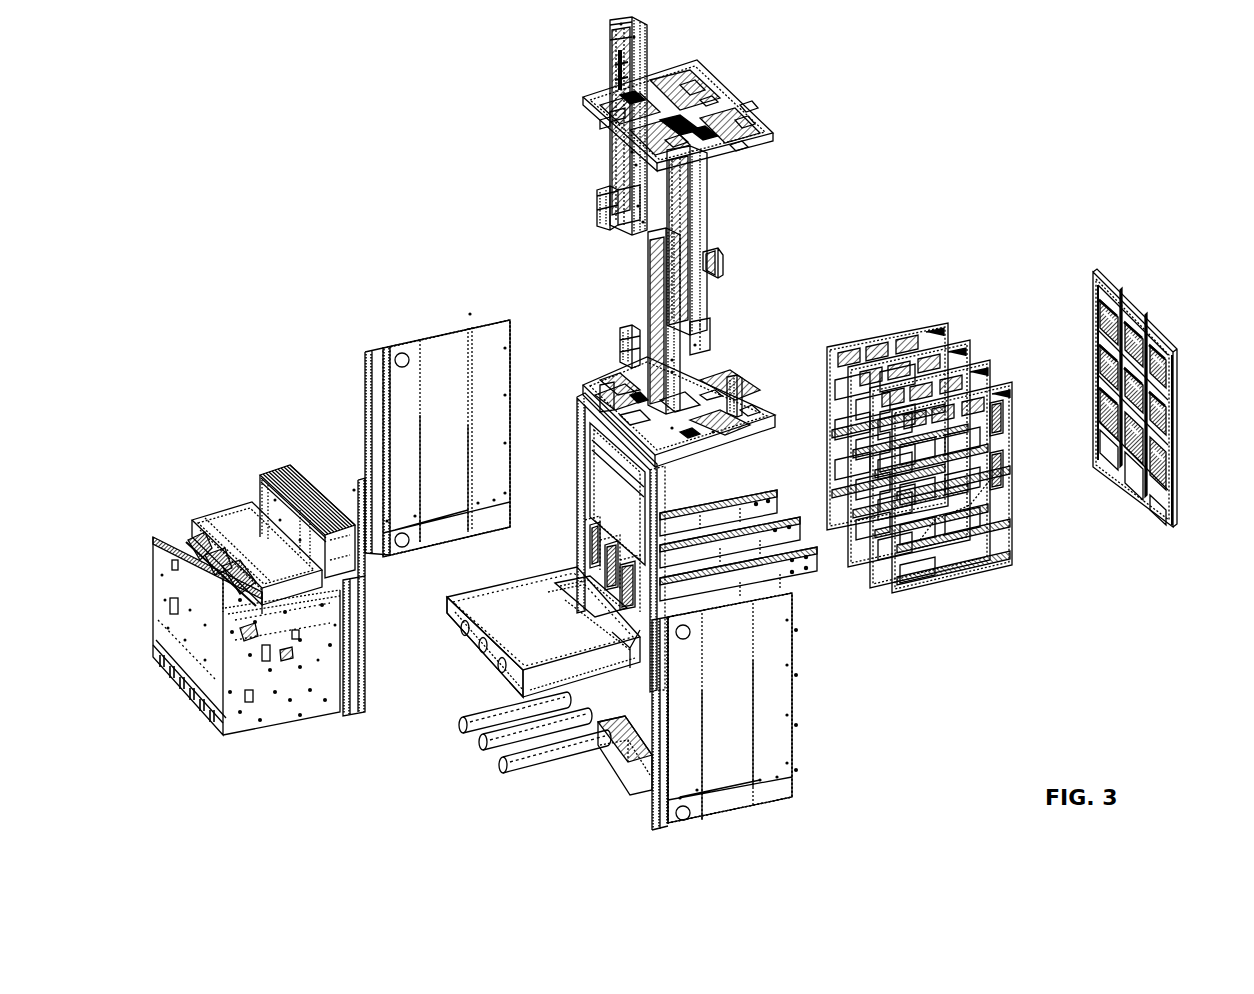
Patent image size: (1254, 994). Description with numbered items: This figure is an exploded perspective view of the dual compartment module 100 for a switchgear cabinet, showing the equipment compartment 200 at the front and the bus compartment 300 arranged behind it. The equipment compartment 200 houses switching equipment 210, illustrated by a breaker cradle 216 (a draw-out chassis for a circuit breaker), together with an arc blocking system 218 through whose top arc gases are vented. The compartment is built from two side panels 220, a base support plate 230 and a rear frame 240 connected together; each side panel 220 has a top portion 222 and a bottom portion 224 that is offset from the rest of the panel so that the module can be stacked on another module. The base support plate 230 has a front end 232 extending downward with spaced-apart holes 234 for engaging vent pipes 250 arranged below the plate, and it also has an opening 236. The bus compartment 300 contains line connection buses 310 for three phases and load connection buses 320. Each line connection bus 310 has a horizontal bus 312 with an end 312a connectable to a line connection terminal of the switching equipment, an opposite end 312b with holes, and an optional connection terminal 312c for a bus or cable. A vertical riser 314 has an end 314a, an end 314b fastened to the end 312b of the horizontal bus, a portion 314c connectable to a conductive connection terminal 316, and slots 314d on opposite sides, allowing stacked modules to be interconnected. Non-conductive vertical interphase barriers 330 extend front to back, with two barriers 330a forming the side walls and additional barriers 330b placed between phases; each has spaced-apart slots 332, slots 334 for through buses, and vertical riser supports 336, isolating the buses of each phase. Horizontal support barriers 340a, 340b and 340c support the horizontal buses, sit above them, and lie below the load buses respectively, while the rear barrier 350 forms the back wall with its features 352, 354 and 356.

The dual compartment module 100 is at (218, 90).
The equipment compartment 200 is at (236, 330).
The switching equipment 210 is at (186, 465).
The breaker cradle 216 is at (192, 518).
The arc blocking system 218 is at (290, 478).
The side panel 220 is at (358, 386).
The top portion 222 is at (450, 392).
The bottom portion 224 is at (450, 520).
The base support plate 230 is at (490, 584).
The front end 232 is at (448, 606).
The holes 234 is at (460, 628).
The opening 236 is at (630, 660).
The rear frame 240 is at (580, 460).
The vent pipes 250 is at (459, 727).
The bus compartment 300 is at (1040, 704).
The line connection bus 310 is at (452, 215).
The horizontal bus 312 is at (598, 190).
The end of horizontal bus 312a is at (600, 208).
The opposite end of horizontal bus 312b is at (642, 222).
The connection terminal 312c is at (742, 388).
The vertical riser 314 is at (602, 42).
The end of vertical riser 314a is at (634, 37).
The end of vertical riser 314b is at (655, 203).
The portion of vertical riser 314c is at (630, 152).
The slots 314d is at (605, 77).
The conductive connection terminal 316 is at (713, 262).
The load connection bus 320 is at (592, 530).
The vertical interphase barrier 330 is at (1110, 177).
The vertical interphase barrier 330a is at (945, 323).
The additional vertical interphase barrier 330b is at (965, 340).
The slots 332 is at (920, 465).
The slots 334 is at (1003, 412).
The vertical riser supports 336 is at (906, 343).
The horizontal support barrier 340a is at (752, 414).
The horizontal support barrier 340b is at (708, 70).
The horizontal support barrier 340c is at (640, 790).
The rear barrier 350 is at (1183, 366).
The backplane sockets 352 is at (1150, 505).
The backplane rails 354 is at (1105, 385).
The backplane connectors 356 is at (1137, 335).